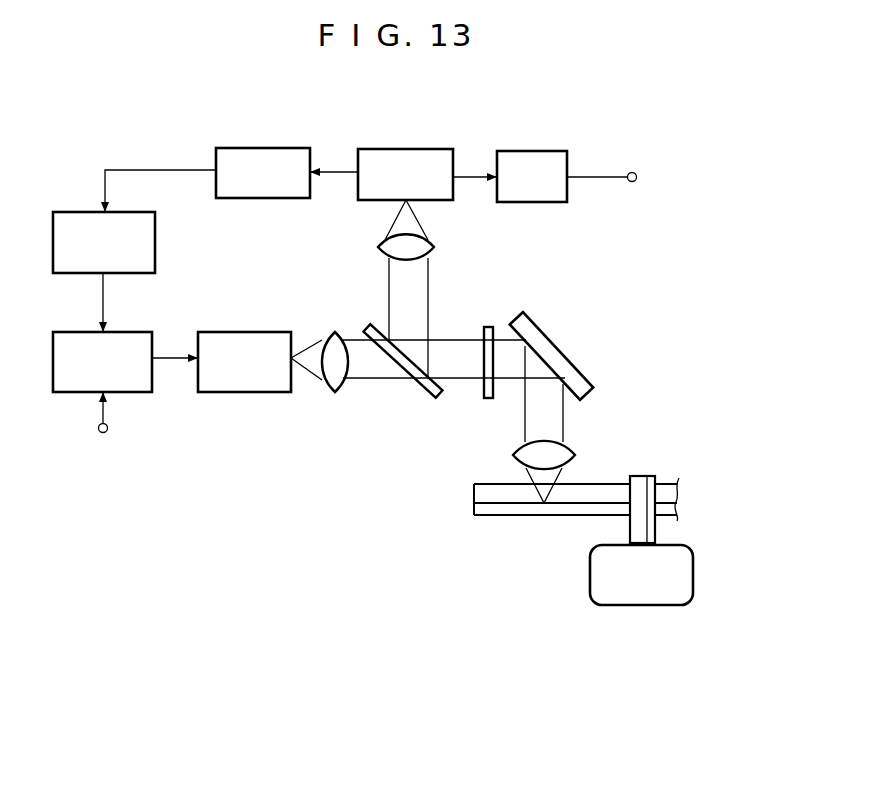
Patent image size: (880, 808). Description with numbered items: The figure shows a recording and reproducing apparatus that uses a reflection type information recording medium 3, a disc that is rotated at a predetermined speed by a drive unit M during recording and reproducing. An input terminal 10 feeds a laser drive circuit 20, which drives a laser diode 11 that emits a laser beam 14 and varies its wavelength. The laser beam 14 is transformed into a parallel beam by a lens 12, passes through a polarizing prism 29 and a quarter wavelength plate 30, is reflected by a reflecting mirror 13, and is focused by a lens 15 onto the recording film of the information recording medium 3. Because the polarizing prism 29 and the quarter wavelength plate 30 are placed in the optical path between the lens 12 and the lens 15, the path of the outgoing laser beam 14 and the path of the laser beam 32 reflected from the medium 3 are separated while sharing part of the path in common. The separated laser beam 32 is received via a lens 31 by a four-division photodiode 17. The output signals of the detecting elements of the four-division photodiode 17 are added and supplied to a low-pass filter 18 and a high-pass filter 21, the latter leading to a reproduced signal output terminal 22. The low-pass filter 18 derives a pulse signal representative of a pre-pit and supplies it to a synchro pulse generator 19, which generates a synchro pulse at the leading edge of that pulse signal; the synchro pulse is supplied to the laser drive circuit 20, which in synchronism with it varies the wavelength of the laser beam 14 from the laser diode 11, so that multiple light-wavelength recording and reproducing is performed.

The low-pass filter 18 is at (276, 148).
The 4-division photodiode 17 is at (406, 149).
The high-pass filter 21 is at (527, 151).
The reproduced signal output terminal 22 is at (632, 171).
The synchro pulse generator 19 is at (156, 237).
The laser drive circuit 20 is at (120, 332).
The laser diode 11 is at (255, 332).
The input terminal 10 is at (107, 430).
The lens 12 is at (333, 394).
The polarizing prism 29 is at (426, 396).
The quarter wavelength plate 30 is at (484, 395).
The reflecting mirror 13 is at (575, 358).
The laser beam 14 is at (532, 422).
The lens 15 is at (572, 448).
The lens 31 is at (378, 248).
The laser beam reflected from the medium 32 is at (436, 318).
The information recording medium 3 is at (474, 497).
The drive unit M is at (631, 605).